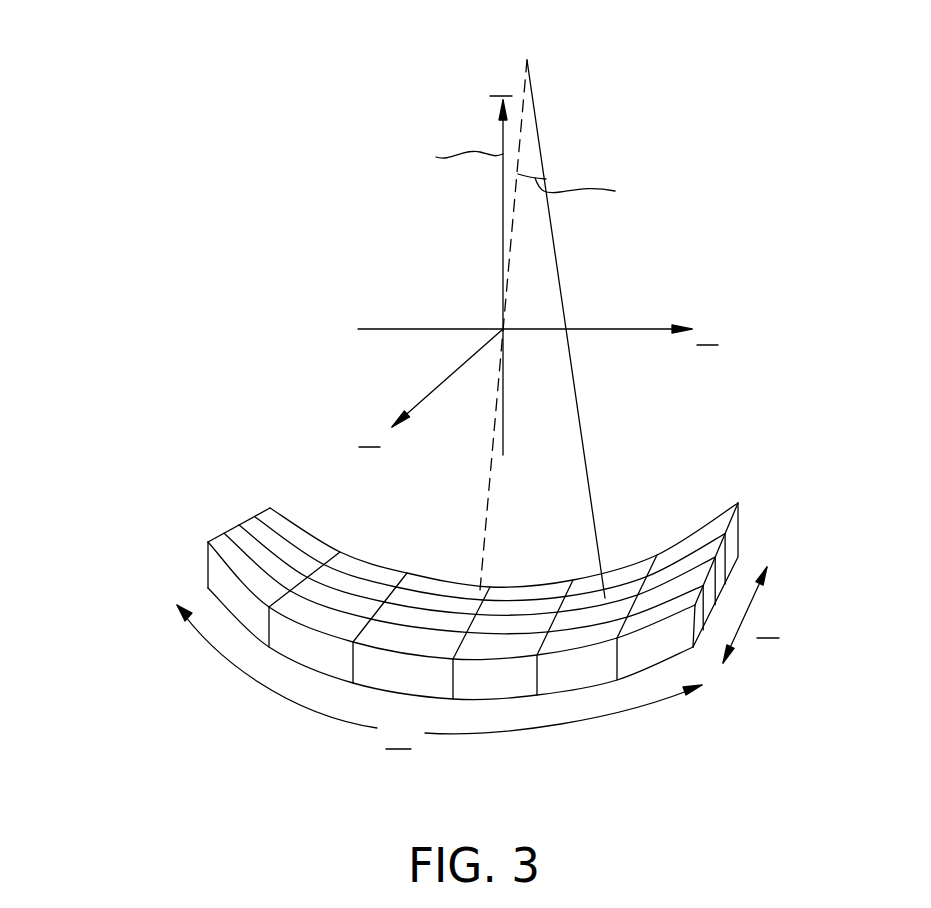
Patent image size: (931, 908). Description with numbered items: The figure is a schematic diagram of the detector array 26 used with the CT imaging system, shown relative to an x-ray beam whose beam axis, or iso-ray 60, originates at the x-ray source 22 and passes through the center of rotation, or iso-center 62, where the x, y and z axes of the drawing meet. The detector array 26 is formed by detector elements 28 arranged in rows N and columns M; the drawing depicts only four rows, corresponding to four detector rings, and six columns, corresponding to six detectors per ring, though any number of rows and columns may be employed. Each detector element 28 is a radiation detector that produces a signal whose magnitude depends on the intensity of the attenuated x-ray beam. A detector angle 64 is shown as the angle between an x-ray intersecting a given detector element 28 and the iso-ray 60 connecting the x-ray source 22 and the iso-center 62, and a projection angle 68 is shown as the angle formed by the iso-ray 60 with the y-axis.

The x-ray source 22 is at (528, 60).
The detector array 26 is at (425, 645).
The detector element 28 is at (310, 673).
The beam axis (iso-ray) 60 is at (488, 505).
The center of rotation (iso-center) 62 is at (503, 329).
The detector angle γ 64 is at (641, 186).
The projection angle β 68 is at (413, 147).